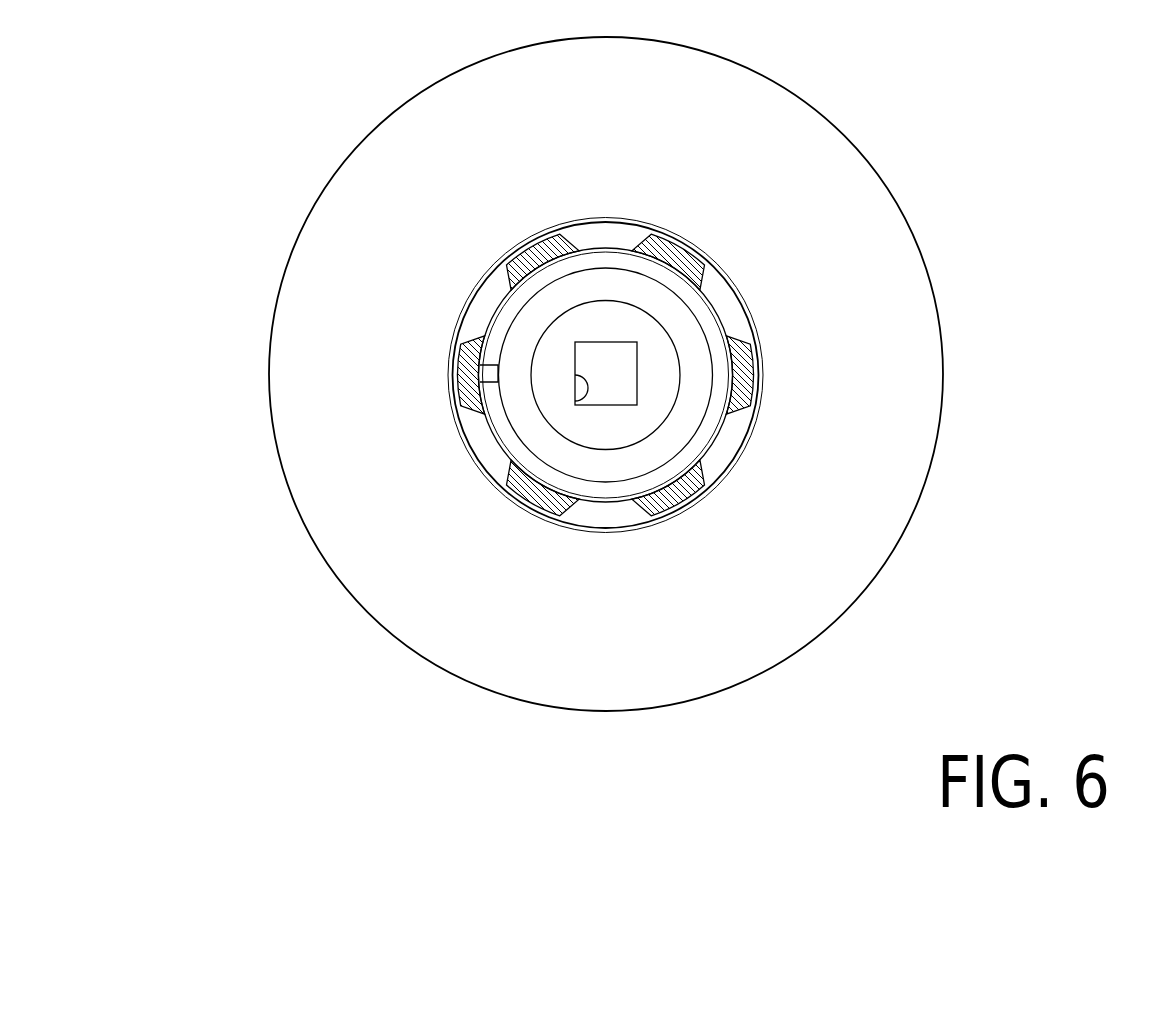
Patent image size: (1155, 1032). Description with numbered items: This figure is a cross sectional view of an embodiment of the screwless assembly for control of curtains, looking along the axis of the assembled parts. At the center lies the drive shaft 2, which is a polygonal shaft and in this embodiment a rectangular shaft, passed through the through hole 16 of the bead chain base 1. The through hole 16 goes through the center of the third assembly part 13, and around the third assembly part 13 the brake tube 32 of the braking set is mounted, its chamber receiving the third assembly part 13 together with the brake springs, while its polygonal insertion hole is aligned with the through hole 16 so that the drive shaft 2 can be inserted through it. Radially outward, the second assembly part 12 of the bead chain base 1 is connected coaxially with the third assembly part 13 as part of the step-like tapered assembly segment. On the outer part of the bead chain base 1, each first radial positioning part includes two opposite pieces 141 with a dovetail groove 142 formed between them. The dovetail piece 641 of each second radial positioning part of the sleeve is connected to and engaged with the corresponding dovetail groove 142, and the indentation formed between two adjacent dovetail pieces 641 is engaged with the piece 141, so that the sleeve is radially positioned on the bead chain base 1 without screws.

The bead chain base 1 is at (822, 157).
The drive shaft 2 is at (603, 356).
The second assembly part 12 is at (605, 490).
The third assembly part 13 is at (589, 437).
The through hole 16 is at (573, 400).
The brake tube 32 is at (513, 357).
The pieces 141 is at (728, 440).
The dovetail groove 142 is at (688, 503).
The dovetail piece 641 is at (747, 373).